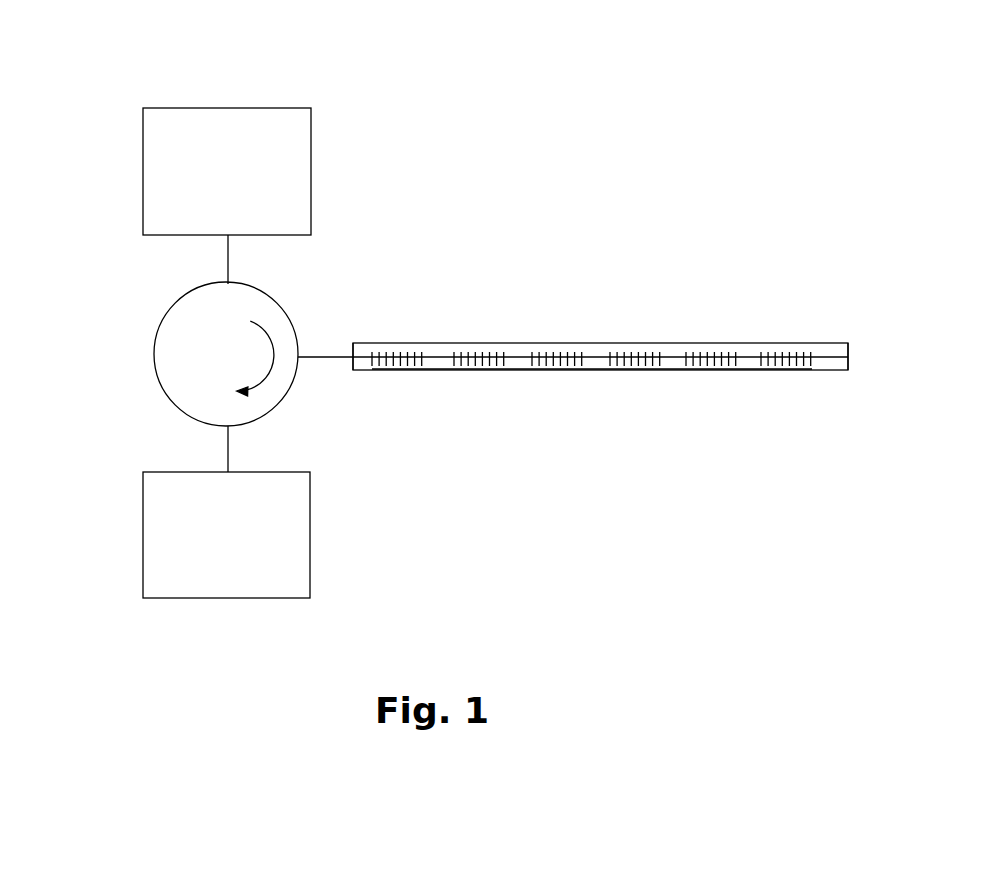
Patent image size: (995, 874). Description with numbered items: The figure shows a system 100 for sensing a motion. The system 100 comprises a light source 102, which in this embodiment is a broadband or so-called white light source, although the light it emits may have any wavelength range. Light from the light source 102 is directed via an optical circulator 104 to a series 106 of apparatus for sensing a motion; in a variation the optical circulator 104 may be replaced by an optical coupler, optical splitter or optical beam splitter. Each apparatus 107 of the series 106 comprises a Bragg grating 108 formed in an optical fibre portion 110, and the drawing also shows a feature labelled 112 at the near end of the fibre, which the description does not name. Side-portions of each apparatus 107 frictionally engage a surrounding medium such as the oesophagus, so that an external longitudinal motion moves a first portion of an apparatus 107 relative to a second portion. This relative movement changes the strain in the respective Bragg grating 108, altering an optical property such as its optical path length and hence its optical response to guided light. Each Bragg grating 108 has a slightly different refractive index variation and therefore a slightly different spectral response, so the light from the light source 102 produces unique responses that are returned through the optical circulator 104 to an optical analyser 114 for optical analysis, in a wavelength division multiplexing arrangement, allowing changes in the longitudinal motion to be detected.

The system for sensing a motion 100 is at (448, 117).
The light source 102 is at (168, 167).
The optical circulator 104 is at (177, 353).
The series of apparatus for sensing a motion 106 is at (598, 271).
The apparatus for sensing a motion 107 is at (386, 381).
The Bragg grating 108 is at (402, 352).
The optical fibre portion 110 is at (837, 352).
The proximal end of fiber 112 is at (368, 340).
The optical analyser 114 is at (163, 522).